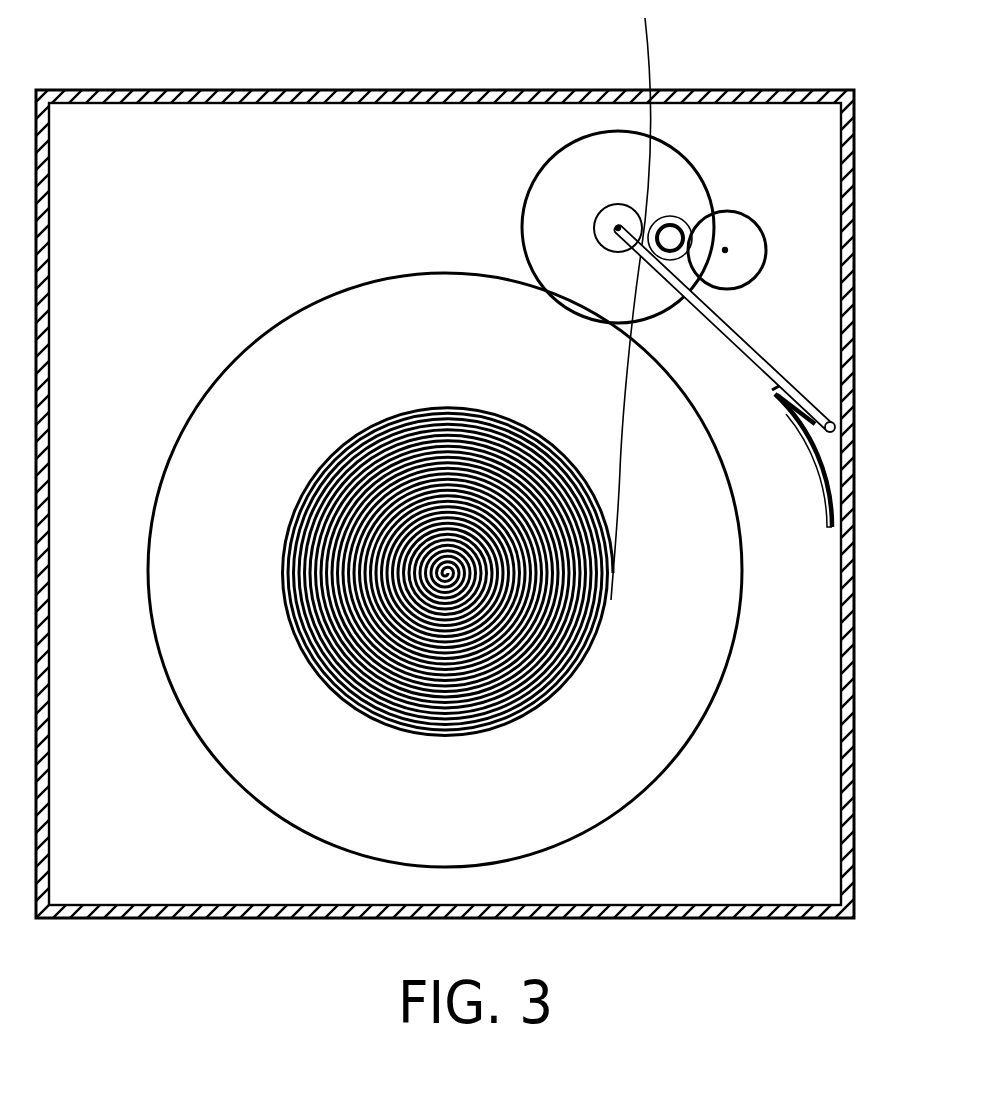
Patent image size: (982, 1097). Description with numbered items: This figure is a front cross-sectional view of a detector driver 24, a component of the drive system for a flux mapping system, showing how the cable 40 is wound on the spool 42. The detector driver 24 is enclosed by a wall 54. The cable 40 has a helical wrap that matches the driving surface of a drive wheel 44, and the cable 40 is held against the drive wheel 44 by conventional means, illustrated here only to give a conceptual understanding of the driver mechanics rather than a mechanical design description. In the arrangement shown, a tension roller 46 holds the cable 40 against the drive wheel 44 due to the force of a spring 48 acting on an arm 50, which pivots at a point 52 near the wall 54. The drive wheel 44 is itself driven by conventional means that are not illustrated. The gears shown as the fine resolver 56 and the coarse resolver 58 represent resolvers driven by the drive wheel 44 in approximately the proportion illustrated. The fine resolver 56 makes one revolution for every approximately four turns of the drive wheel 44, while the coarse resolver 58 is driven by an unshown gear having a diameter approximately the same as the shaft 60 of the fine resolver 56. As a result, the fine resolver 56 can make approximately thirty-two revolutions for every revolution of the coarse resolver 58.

The detector driver 24 is at (430, 40).
The wall 54 is at (177, 96).
The spool 42 is at (232, 750).
The cable 40 is at (623, 396).
The coarse resolver 58 is at (553, 186).
The drive wheel 44 is at (680, 214).
The fine resolver 56 is at (742, 228).
The shaft 60 is at (727, 253).
The arm 50 is at (753, 345).
The tension roller 46 is at (596, 238).
The spring 48 is at (828, 482).
The point 52 is at (838, 430).